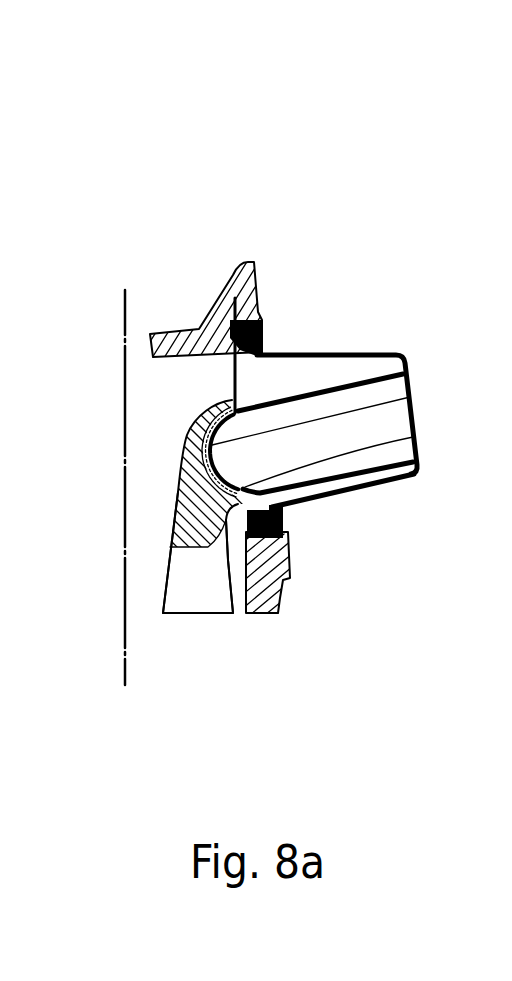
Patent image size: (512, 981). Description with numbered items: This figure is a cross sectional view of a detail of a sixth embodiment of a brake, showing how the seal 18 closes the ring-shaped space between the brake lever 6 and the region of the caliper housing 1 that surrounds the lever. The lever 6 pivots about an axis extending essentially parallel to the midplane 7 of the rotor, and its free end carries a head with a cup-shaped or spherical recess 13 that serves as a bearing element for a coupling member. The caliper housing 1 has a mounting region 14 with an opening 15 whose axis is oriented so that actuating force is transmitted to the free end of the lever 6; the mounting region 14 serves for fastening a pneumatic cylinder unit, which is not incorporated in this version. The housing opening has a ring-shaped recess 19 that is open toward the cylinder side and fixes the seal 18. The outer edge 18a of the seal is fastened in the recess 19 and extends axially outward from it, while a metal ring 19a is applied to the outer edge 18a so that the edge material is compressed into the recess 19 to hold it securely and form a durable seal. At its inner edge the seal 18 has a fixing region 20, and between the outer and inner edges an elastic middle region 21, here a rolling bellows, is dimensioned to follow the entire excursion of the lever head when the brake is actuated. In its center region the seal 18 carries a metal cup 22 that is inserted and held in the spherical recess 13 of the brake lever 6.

The caliper housing 1 is at (163, 330).
The brake lever 6 is at (183, 588).
The midplane of the rotor 7 is at (125, 322).
The recess 13 is at (205, 548).
The mounting region 14 is at (290, 540).
The opening 15 is at (214, 366).
The seal 18 is at (343, 346).
The outer edge of the seal 18a is at (288, 526).
The ring-shaped recess 19 is at (235, 300).
The metal ring 19a is at (246, 338).
The fixing region 20 is at (410, 438).
The elastic middle region 21 is at (392, 472).
The metal cup 22 is at (406, 398).